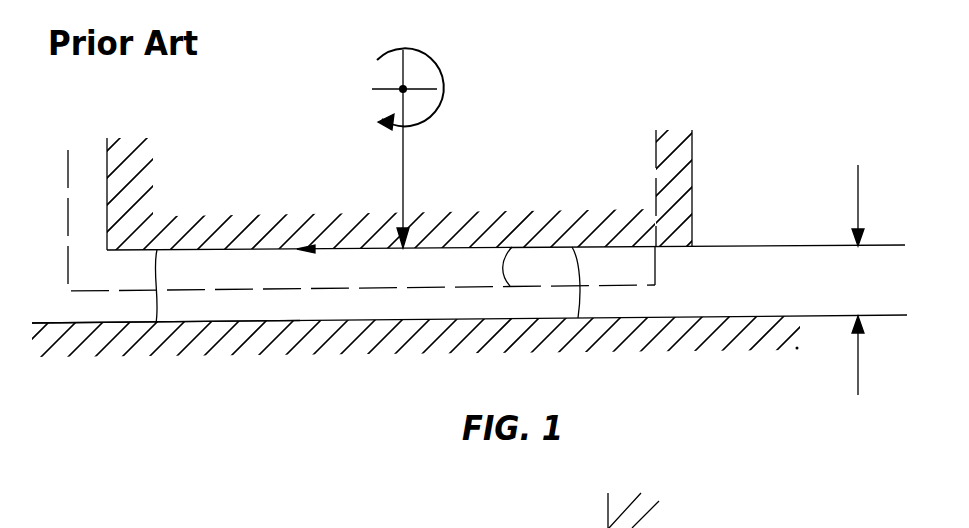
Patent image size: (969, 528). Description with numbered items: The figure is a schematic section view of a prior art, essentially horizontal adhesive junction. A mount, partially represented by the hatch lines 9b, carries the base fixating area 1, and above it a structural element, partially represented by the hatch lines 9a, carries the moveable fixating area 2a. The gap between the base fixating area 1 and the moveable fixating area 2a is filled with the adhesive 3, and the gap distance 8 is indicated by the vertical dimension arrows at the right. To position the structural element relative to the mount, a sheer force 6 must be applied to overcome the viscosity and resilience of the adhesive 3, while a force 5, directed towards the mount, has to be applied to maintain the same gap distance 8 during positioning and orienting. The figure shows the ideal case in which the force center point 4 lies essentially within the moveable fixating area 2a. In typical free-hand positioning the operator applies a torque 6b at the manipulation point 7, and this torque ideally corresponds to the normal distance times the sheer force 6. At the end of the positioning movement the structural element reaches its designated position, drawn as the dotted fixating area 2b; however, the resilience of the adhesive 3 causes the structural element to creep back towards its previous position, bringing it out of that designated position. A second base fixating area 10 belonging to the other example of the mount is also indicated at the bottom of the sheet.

The base fixating area 1 is at (725, 322).
The moveable fixating area 2a is at (572, 247).
The dotted fixating area 2b is at (512, 247).
The adhesive 3 is at (515, 310).
The force center point 4 is at (394, 248).
The force 5 is at (405, 163).
The sheer force 6 is at (327, 248).
The torque 6b is at (438, 68).
The manipulation point 7 is at (398, 86).
The gap distance 8 is at (856, 280).
The hatch lines 9a is at (203, 218).
The hatch lines 9b is at (262, 355).
The base fixating area 10 is at (636, 526).